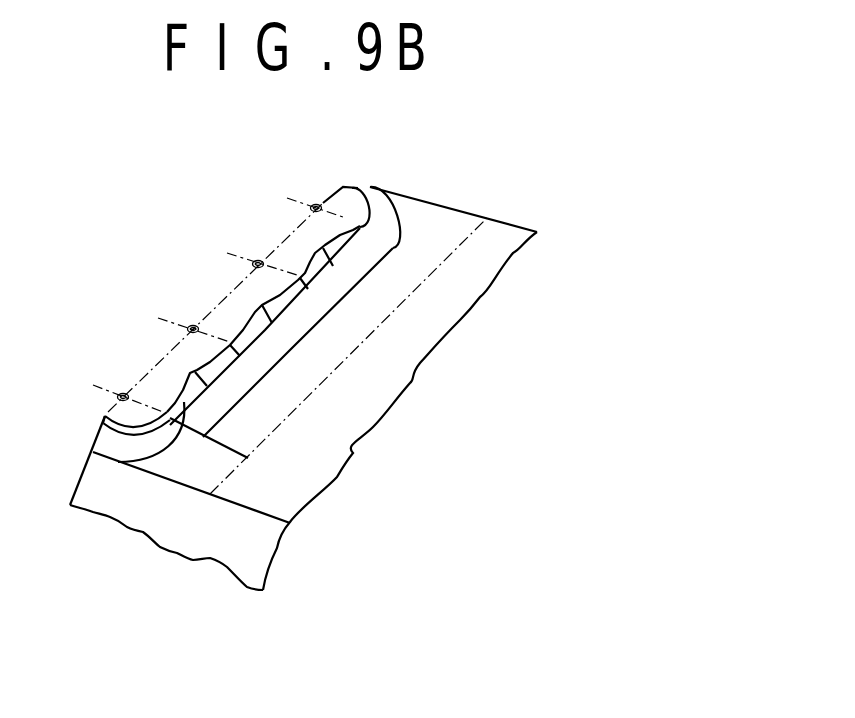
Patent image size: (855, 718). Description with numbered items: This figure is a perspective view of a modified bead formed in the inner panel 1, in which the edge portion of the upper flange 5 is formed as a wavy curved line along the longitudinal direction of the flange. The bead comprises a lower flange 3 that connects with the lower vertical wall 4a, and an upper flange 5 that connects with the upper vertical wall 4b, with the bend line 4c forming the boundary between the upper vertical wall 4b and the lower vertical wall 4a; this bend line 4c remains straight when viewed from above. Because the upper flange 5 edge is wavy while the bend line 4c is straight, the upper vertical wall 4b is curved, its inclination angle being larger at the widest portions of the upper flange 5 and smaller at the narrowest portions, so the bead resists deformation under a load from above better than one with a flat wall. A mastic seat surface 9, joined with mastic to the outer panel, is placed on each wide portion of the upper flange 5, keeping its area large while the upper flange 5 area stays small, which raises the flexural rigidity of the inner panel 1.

The inner panel 1 is at (450, 225).
The lower flange 3 is at (268, 410).
The upper flange 5 is at (172, 362).
The mastic seat surface 9 is at (121, 394).
The lower vertical wall 4a is at (250, 377).
The upper vertical wall 4b is at (185, 403).
The bend line 4c is at (183, 373).